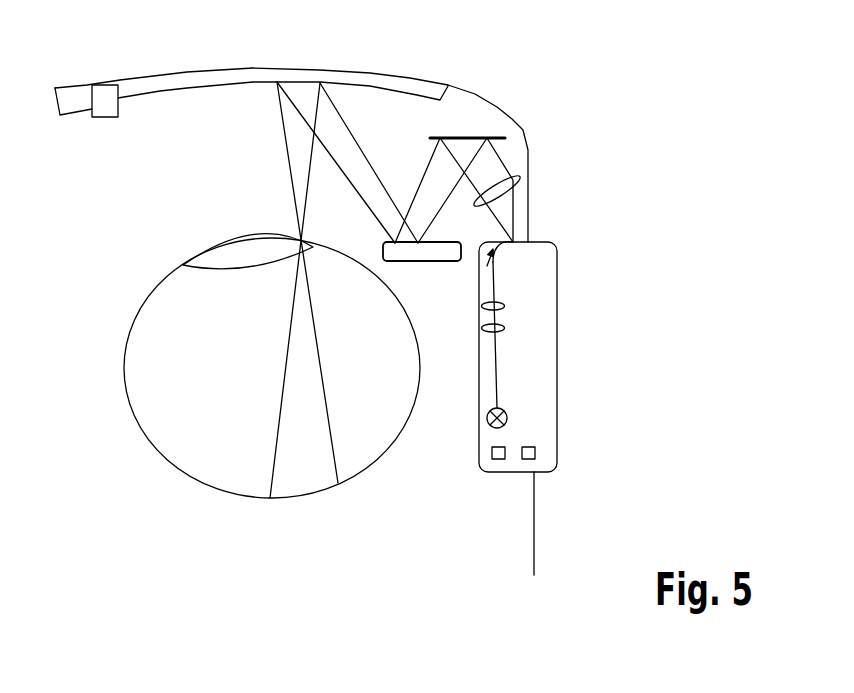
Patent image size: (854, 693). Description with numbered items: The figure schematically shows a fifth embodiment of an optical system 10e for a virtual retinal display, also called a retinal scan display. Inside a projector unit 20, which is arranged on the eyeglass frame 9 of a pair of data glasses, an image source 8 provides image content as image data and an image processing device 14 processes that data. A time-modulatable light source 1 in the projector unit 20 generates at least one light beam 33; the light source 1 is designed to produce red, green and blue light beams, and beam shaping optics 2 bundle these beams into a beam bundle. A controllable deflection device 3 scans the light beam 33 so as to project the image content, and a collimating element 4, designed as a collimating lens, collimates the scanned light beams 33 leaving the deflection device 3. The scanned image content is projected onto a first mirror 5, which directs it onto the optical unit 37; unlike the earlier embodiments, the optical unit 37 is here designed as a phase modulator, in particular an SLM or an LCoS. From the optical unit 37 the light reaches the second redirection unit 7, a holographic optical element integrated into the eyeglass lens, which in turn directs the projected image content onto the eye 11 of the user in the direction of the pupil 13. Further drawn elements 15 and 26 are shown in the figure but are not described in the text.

The optical system 10e is at (607, 227).
The second redirection unit 7 is at (393, 80).
The eye-tracking sensor 15 is at (108, 98).
The first mirror 5 is at (490, 134).
The collimating element 4 is at (512, 182).
The controllable deflection device 3 is at (518, 236).
The optical unit 37 is at (443, 262).
The eye 11 is at (147, 363).
The pupil 13 is at (222, 248).
The pupil 26 is at (183, 266).
The projector unit 20 is at (557, 271).
The light beam 33 is at (495, 352).
The beam shaping optics 2 is at (505, 304).
The time-modulatable light source 1 is at (507, 418).
The image processing device 14 is at (535, 453).
The image source 8 is at (500, 460).
The eyeglass frame 9 is at (534, 500).